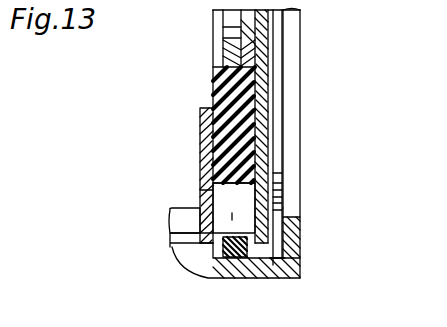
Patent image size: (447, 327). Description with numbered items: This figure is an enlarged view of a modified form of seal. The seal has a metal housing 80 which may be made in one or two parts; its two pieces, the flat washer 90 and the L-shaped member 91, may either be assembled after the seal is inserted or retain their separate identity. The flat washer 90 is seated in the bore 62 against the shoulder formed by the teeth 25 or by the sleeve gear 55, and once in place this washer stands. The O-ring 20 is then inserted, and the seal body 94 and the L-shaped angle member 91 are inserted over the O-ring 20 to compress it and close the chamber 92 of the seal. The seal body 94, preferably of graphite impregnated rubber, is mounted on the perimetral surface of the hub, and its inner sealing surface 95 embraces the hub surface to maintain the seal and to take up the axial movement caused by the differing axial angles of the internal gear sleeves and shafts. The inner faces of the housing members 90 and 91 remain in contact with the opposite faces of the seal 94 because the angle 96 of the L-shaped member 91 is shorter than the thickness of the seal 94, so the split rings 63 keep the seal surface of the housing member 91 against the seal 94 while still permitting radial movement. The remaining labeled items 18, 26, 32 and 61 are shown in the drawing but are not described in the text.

The housing 18 is at (172, 10).
The bore 26 is at (209, 5).
The sleeve 32 is at (262, 5).
The outer tube 61 is at (348, 0).
The inner sealing surface 95 is at (238, 40).
The seal body 94 is at (232, 146).
The L-shaped member 91 is at (263, 130).
The housing 80 is at (204, 126).
The flat washer 90 is at (202, 191).
The chamber 92 is at (234, 208).
The split rings 63 is at (283, 224).
The bore 62 is at (283, 240).
The teeth 25 is at (188, 224).
The angle 96 is at (222, 240).
The O-ring 20 is at (240, 266).
The sleeve gear 55 is at (276, 268).